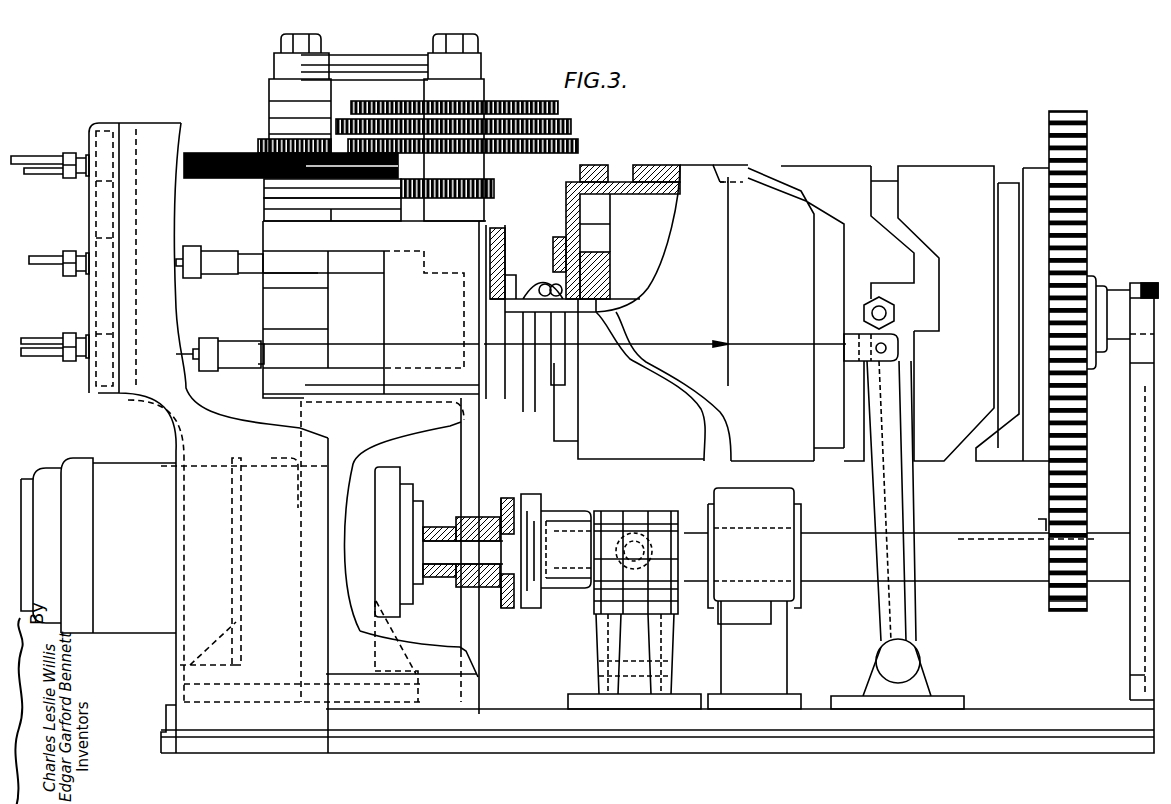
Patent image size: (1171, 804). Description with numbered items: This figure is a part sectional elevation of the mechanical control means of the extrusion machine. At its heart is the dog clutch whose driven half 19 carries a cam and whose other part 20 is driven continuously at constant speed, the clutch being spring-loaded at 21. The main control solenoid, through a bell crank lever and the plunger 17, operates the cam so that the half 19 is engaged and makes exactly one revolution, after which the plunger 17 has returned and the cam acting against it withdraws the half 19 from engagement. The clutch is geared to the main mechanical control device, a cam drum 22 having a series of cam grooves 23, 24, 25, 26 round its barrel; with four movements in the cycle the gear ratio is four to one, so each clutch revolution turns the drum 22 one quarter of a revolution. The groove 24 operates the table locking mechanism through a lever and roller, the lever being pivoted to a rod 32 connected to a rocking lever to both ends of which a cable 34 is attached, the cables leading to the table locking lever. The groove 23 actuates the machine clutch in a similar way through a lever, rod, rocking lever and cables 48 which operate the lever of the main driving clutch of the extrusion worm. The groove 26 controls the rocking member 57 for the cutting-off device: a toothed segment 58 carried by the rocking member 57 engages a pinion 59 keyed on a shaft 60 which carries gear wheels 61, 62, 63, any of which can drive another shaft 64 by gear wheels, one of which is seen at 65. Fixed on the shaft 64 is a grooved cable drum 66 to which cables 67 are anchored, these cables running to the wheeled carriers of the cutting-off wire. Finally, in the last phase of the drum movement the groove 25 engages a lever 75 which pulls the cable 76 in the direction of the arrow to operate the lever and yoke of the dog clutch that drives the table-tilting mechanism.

The plunger 17 is at (655, 513).
The dog clutch half 19 is at (530, 601).
The dog clutch part 20 is at (500, 603).
The spring loading 21 is at (587, 507).
The cam drum 22 is at (570, 448).
The cam groove 23 is at (714, 453).
The cam groove 24 is at (827, 453).
The cam groove 25 is at (878, 173).
The cam groove 26 is at (961, 453).
The rod 32 is at (247, 263).
The cable 34 is at (51, 263).
The cables 48 is at (46, 349).
The rocking member 57 is at (271, 200).
The toothed segment 58 is at (268, 180).
The pinion 59 is at (486, 182).
The shaft 60 is at (441, 36).
The gear wheel 61 is at (553, 146).
The gear wheel 62 is at (563, 122).
The gear wheel 63 is at (550, 100).
The shaft 64 is at (316, 36).
The gear wheel 65 is at (252, 136).
The grooved cable drum 66 is at (220, 171).
The cables 67 is at (53, 168).
The lever 75 is at (908, 615).
The cable 76 is at (771, 338).